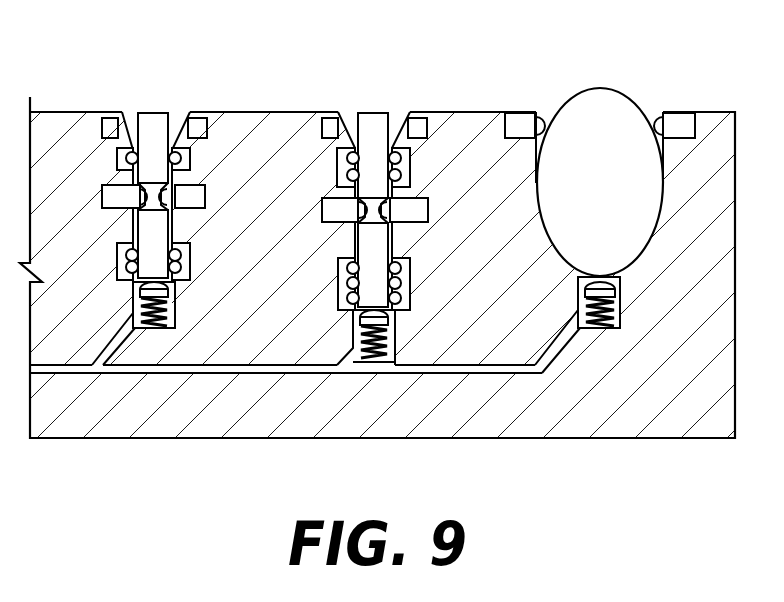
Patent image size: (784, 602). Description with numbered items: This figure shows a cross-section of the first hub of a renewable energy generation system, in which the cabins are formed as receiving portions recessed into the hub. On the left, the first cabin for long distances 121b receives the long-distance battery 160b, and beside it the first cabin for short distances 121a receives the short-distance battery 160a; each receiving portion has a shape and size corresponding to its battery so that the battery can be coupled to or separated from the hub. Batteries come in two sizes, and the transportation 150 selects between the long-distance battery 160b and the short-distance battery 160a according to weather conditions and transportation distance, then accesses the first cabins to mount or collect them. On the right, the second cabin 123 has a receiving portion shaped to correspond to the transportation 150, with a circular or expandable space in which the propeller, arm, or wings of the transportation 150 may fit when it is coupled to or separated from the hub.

The first cabin for short distances 121a is at (405, 117).
The first cabin for long distances 121b is at (130, 121).
The short-distance battery 160a is at (366, 113).
The long-distance battery 160b is at (152, 116).
The transportation 150 is at (598, 92).
The second cabin 123 is at (652, 118).